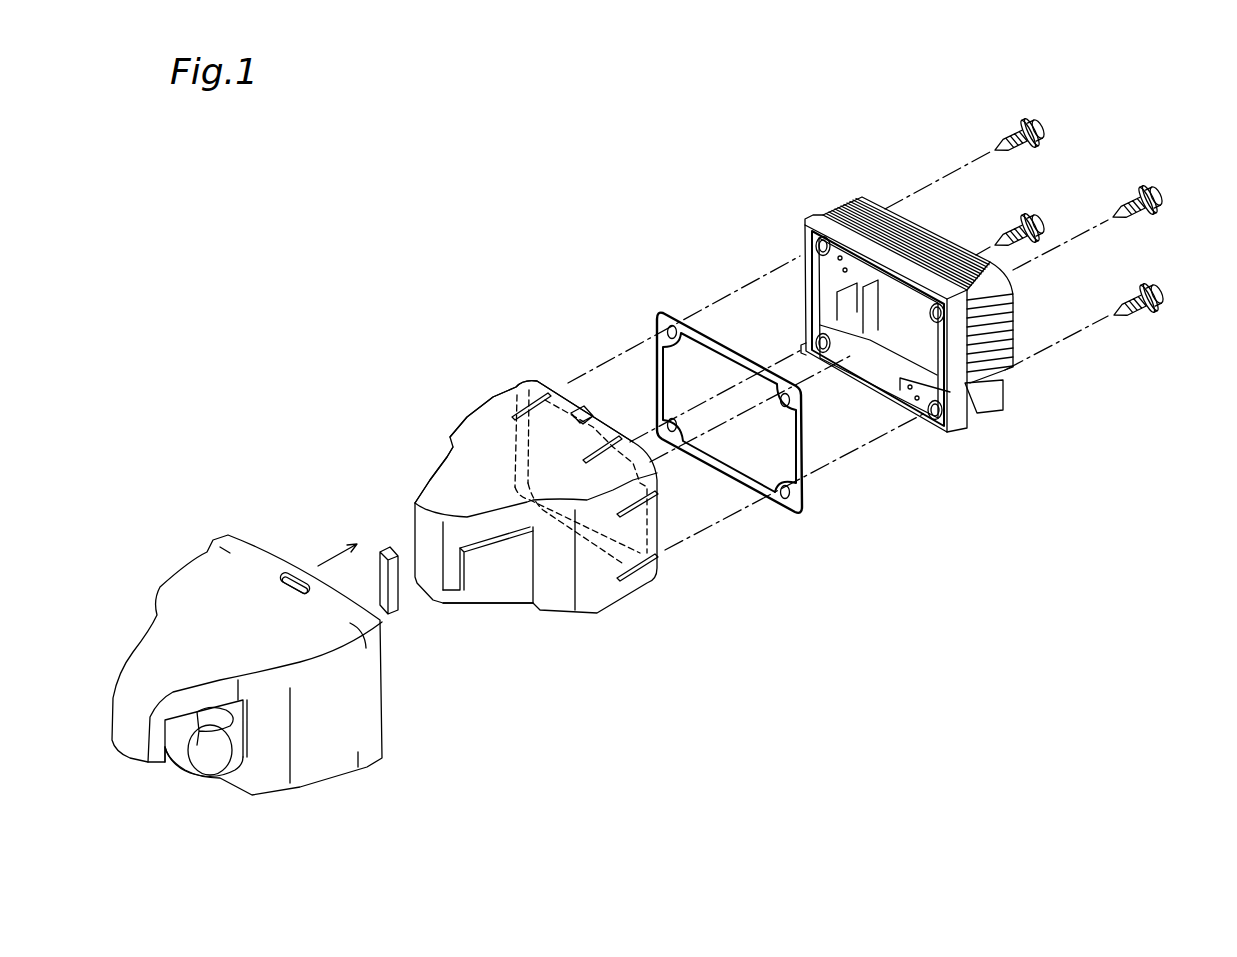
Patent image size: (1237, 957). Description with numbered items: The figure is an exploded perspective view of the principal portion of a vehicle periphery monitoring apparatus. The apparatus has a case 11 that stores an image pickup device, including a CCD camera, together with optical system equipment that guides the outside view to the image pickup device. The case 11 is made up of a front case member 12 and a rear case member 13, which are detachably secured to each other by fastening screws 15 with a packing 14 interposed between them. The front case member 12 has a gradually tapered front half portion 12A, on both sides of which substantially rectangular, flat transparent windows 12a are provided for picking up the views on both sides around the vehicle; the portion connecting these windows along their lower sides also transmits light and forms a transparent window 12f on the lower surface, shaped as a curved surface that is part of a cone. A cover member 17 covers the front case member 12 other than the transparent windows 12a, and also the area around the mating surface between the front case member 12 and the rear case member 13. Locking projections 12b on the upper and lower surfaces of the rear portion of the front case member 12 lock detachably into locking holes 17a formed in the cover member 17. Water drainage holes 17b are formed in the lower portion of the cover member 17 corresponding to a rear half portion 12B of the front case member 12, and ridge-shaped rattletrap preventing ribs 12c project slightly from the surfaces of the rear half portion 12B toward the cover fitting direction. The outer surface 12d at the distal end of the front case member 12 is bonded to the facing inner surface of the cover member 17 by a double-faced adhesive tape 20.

The case 11 is at (445, 333).
The front case member 12 is at (618, 600).
The front half portion 12A is at (437, 473).
The rear half portion 12B is at (470, 408).
The transparent windows 12a is at (495, 573).
The locking projections 12b is at (578, 408).
The rattletrap preventing ribs 12c is at (515, 412).
The outer surface of the distal end 12d is at (415, 540).
The transparent window on the lower surface 12f is at (473, 602).
The rear case member 13 is at (990, 407).
The packing 14 is at (808, 496).
The screws 15 is at (1040, 122).
The cover member 17 is at (188, 583).
The locking holes 17a is at (292, 570).
The water drainage holes 17b is at (190, 735).
The double-faced adhesive tape 20 is at (390, 597).